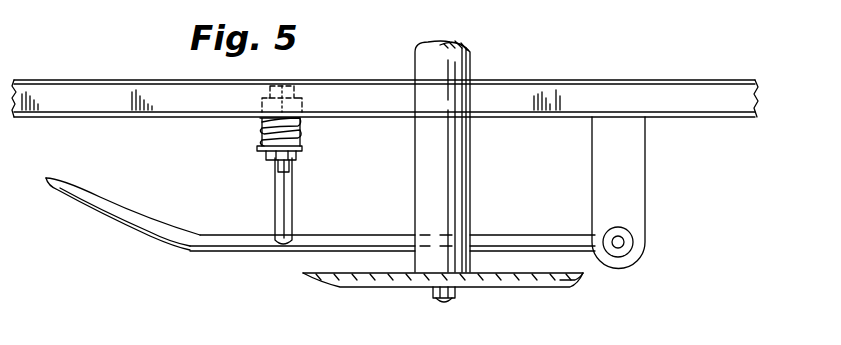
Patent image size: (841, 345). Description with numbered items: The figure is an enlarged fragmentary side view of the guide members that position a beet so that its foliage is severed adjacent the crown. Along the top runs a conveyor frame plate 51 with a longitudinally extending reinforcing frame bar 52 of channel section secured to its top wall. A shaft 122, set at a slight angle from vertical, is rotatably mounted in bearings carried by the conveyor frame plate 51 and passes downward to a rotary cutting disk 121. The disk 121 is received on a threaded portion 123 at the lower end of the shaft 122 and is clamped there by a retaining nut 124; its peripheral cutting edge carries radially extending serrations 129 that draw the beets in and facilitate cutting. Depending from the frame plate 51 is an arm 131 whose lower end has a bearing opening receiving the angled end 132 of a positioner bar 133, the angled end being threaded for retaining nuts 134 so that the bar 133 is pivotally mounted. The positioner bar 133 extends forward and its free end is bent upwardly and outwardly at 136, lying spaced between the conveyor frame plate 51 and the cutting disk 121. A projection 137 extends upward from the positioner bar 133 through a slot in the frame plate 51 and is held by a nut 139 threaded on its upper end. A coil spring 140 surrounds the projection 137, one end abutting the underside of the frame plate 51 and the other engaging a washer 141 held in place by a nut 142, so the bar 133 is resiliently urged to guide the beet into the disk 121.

The conveyor frame plate 51 is at (548, 112).
The reinforcing frame bar 52 is at (632, 90).
The rotary cutting disk 121 is at (368, 278).
The shaft 122 is at (468, 50).
The threaded portion 123 is at (442, 301).
The retaining nut 124 is at (455, 302).
The serrations 129 is at (574, 284).
The arm 131 is at (643, 178).
The angled end 132 is at (626, 242).
The positioner bar 133 is at (505, 240).
The retaining nuts 134 is at (627, 234).
The upwardly and outwardly bent free end 136 is at (68, 203).
The projection 137 is at (293, 200).
The nut 139 is at (262, 102).
The coil spring 140 is at (262, 133).
The washer 141 is at (303, 148).
The nut 142 is at (283, 166).